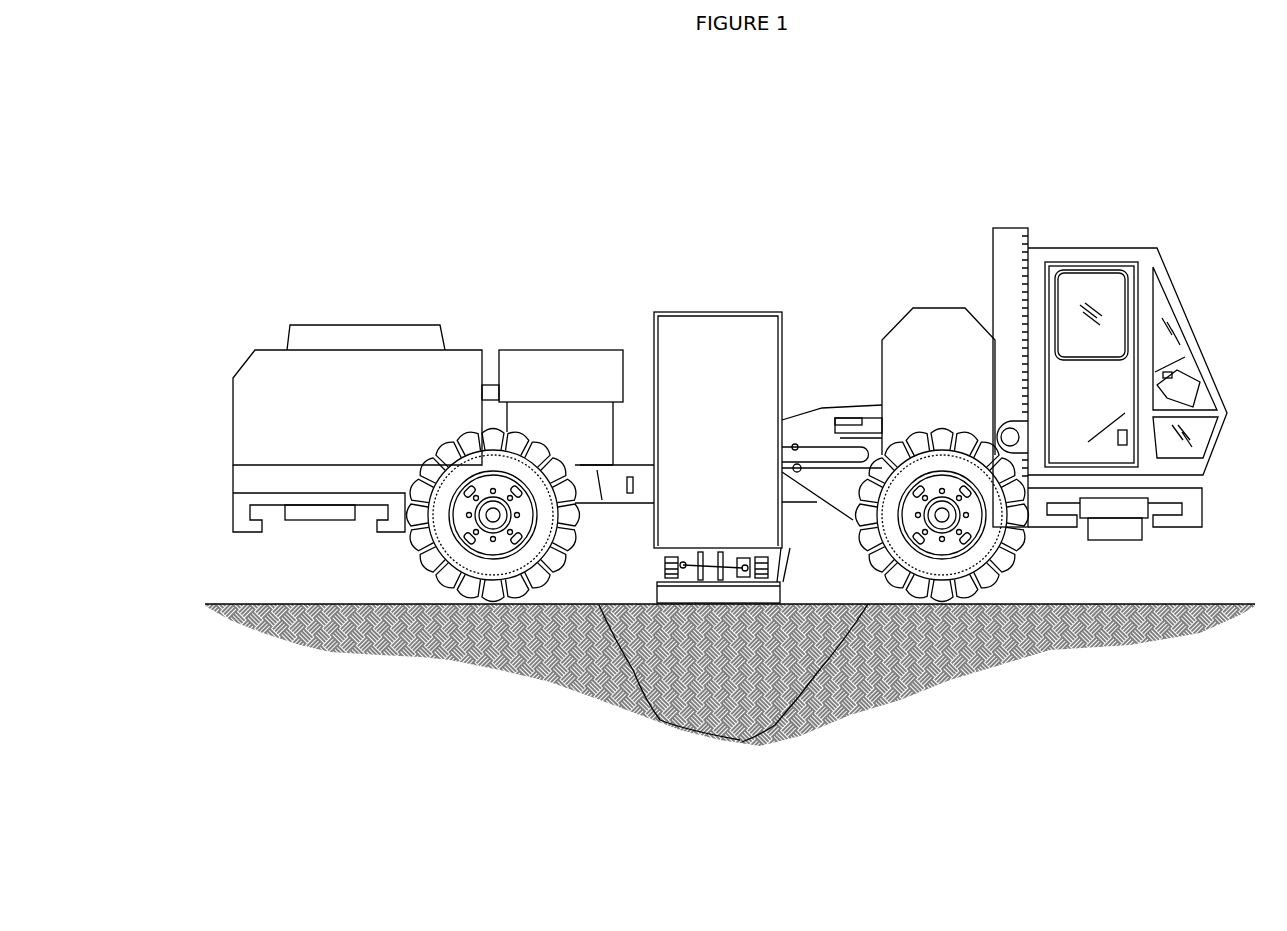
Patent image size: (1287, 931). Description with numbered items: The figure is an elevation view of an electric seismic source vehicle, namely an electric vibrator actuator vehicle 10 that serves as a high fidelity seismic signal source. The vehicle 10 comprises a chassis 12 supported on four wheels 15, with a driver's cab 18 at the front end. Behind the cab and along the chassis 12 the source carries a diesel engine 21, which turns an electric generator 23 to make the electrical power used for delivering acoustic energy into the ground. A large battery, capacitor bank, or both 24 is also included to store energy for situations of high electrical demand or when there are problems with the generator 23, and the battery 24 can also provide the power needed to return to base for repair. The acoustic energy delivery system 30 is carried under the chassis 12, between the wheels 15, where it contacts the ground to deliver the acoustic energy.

The electric vibrator actuator vehicle 10 is at (354, 142).
The chassis 12 is at (645, 505).
The wheels 15 is at (414, 563).
The driver's cab 18 is at (1192, 331).
The diesel engine 21 is at (337, 419).
The electric generator 23 is at (549, 386).
The battery 24 is at (925, 384).
The acoustic energy delivery system 30 is at (783, 597).